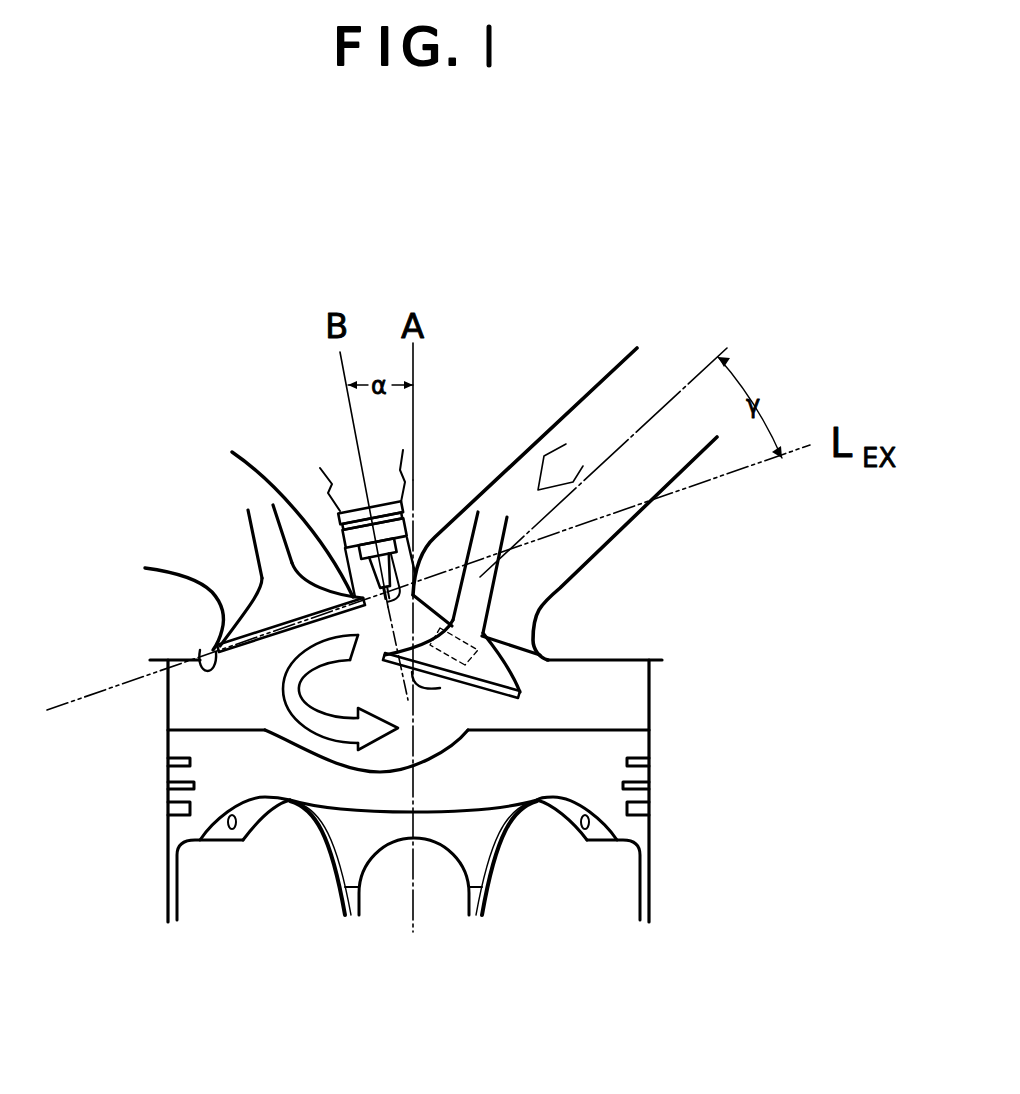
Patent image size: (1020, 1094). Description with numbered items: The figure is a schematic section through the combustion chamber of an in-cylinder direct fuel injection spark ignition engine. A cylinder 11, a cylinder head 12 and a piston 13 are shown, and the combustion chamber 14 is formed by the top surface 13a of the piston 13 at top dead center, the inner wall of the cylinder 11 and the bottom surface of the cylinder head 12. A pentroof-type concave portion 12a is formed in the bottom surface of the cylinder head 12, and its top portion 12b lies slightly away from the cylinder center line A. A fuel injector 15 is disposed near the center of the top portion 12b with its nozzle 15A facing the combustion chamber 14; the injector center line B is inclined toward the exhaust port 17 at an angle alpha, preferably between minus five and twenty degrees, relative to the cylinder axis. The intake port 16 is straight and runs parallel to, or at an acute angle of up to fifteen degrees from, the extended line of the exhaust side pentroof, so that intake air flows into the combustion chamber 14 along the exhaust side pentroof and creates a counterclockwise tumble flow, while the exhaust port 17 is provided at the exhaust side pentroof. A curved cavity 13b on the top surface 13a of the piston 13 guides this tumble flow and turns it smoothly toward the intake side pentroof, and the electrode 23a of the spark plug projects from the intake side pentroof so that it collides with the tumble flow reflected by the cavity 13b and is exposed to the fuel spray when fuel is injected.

The cylinder 11 is at (652, 698).
The cylinder head 12 is at (600, 600).
The concave portion 12a is at (200, 656).
The top portion 12b is at (381, 605).
The piston 13 is at (610, 778).
The top surface of the piston 13a is at (623, 727).
The cavity 13b is at (400, 750).
The combustion chamber 14 is at (283, 667).
The fuel injector 15 is at (343, 473).
The nozzle 15A is at (416, 572).
The intake port 16 is at (548, 432).
The exhaust port 17 is at (236, 454).
The electrode 23a is at (442, 702).